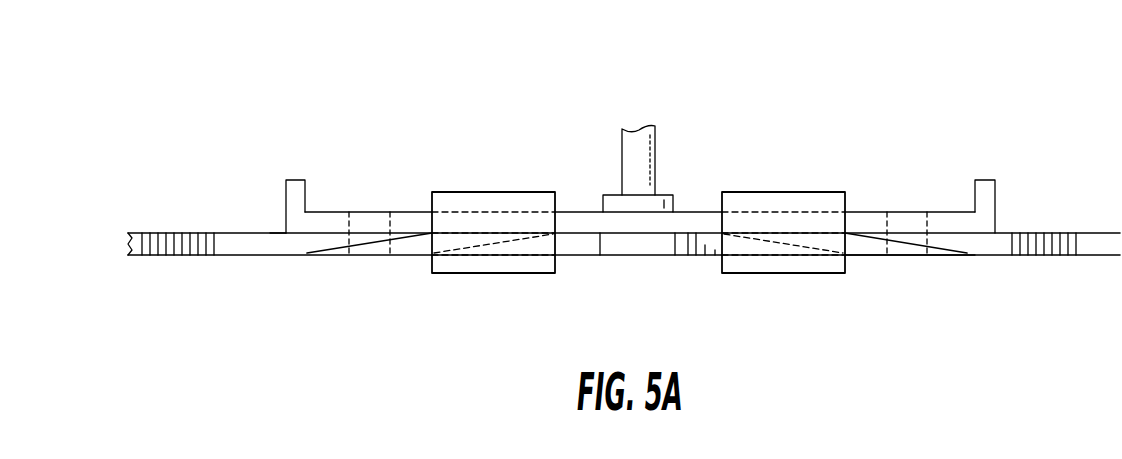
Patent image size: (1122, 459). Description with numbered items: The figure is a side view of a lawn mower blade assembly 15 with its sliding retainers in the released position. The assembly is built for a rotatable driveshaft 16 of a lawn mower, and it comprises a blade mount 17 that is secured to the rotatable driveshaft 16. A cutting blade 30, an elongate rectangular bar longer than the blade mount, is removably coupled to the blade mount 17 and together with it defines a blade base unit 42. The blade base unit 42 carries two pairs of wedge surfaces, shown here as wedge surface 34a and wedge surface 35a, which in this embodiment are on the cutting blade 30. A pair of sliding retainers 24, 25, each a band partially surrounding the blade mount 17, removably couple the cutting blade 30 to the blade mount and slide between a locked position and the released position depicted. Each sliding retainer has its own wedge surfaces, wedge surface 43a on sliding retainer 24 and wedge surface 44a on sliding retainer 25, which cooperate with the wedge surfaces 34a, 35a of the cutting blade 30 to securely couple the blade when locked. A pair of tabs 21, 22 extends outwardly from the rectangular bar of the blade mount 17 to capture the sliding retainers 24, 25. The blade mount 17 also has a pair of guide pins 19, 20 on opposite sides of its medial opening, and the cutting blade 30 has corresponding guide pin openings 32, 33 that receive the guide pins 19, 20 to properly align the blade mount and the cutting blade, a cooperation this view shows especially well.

The lawn mower blade assembly 15 is at (191, 90).
The rotatable driveshaft 16 is at (622, 138).
The blade mount 17 is at (338, 207).
The guide pin 19 is at (378, 222).
The guide pin 20 is at (910, 222).
The tab 21 is at (295, 179).
The tab 22 is at (990, 180).
The sliding retainer 24 is at (490, 189).
The sliding retainer 25 is at (783, 189).
The cutting blade 30 is at (241, 230).
The guide pin opening 32 is at (382, 256).
The guide pin opening 33 is at (873, 253).
The wedge surface 34a is at (360, 256).
The wedge surface 35a is at (930, 256).
The blade base unit 42 is at (275, 224).
The wedge surface 43a is at (505, 245).
The wedge surface 44a is at (768, 243).